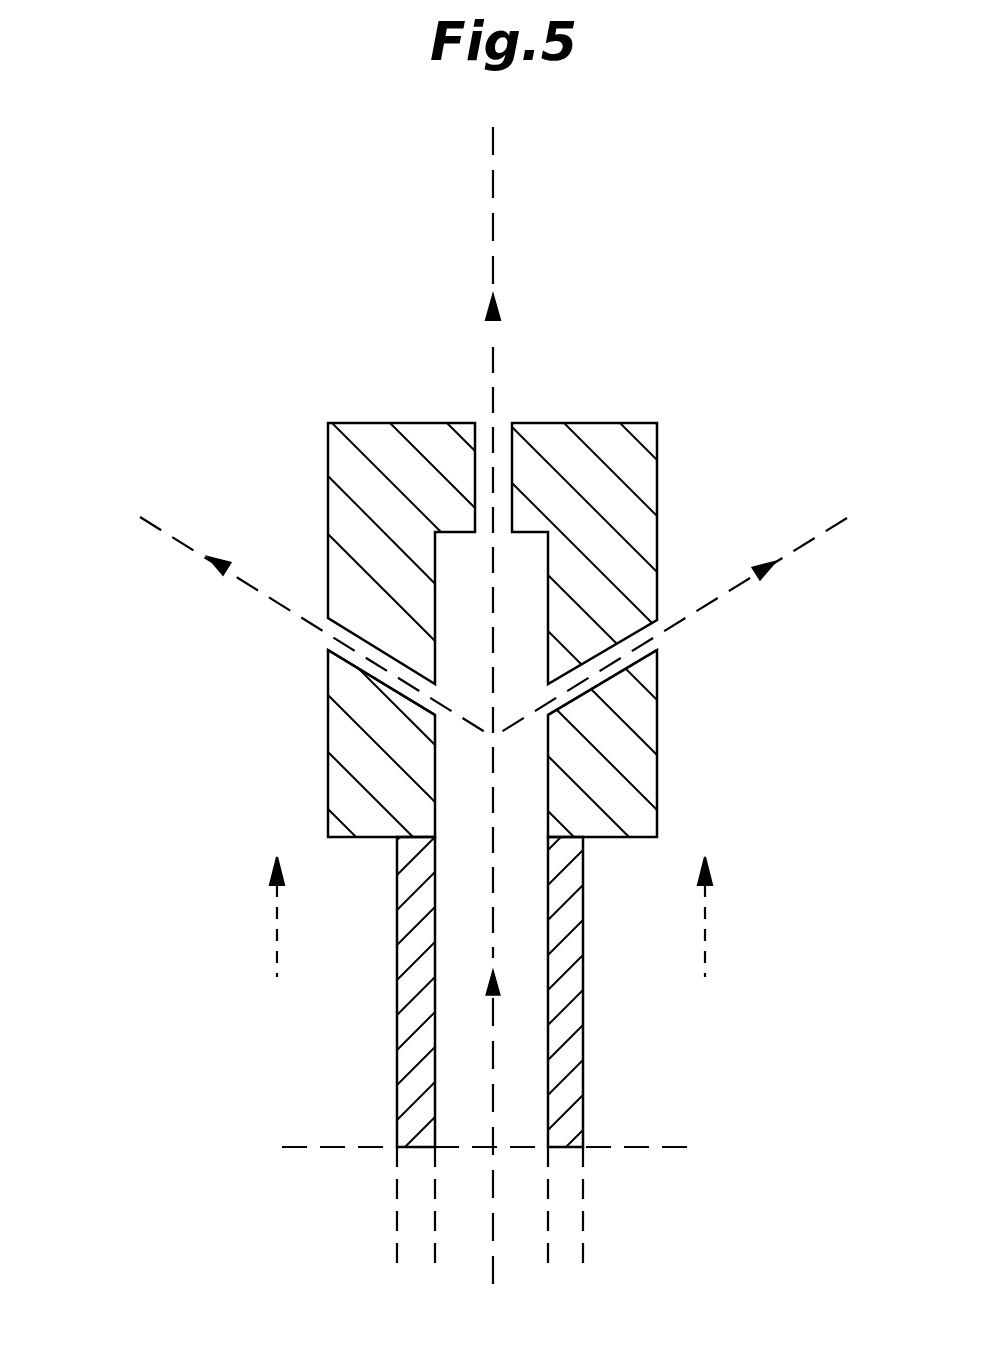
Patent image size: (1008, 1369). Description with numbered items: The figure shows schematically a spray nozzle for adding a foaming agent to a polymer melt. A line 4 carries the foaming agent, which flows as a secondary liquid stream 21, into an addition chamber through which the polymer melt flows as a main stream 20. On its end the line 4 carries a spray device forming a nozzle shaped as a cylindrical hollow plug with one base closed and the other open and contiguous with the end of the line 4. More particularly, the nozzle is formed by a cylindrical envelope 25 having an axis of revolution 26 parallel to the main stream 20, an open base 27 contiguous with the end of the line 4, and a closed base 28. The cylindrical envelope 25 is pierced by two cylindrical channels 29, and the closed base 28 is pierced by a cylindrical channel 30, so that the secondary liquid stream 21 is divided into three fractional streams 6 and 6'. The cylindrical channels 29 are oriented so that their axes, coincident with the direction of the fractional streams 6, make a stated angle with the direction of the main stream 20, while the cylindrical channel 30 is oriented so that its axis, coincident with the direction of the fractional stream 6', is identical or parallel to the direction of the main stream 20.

The line 4 is at (570, 1105).
The fractional streams 6 is at (493, 587).
The fractional stream 6' is at (558, 707).
The main stream 20 is at (277, 905).
The secondary liquid stream 21 is at (493, 1017).
The cylindrical envelope 25 is at (647, 745).
The axis of revolution 26 is at (493, 773).
The open base 27 is at (515, 838).
The closed base 28 is at (415, 422).
The cylindrical channels 29 is at (370, 663).
The cylindrical channel 30 is at (493, 482).